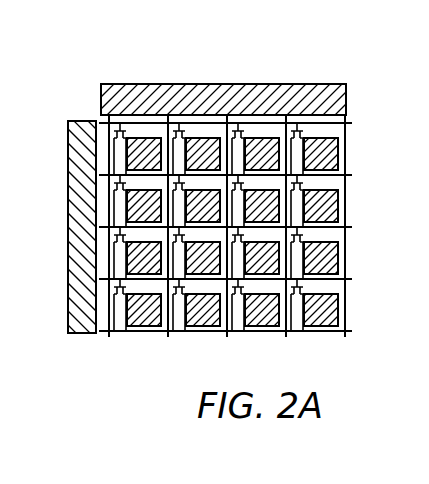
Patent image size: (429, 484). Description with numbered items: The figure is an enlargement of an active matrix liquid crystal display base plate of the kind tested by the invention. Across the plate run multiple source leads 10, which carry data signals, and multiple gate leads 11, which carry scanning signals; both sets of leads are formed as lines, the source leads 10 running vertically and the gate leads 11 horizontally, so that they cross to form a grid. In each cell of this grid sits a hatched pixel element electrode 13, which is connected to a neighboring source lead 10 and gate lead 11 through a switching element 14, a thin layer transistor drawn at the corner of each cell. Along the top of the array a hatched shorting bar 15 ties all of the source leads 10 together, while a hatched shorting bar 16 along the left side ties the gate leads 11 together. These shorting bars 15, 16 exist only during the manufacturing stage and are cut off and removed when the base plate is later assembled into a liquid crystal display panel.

The source leads 10 is at (345, 150).
The gate leads 11 is at (346, 174).
The pixel element electrodes 13 is at (328, 210).
The switching elements 14 is at (300, 117).
The shorting bar 15 is at (268, 93).
The shorting bar 16 is at (82, 257).